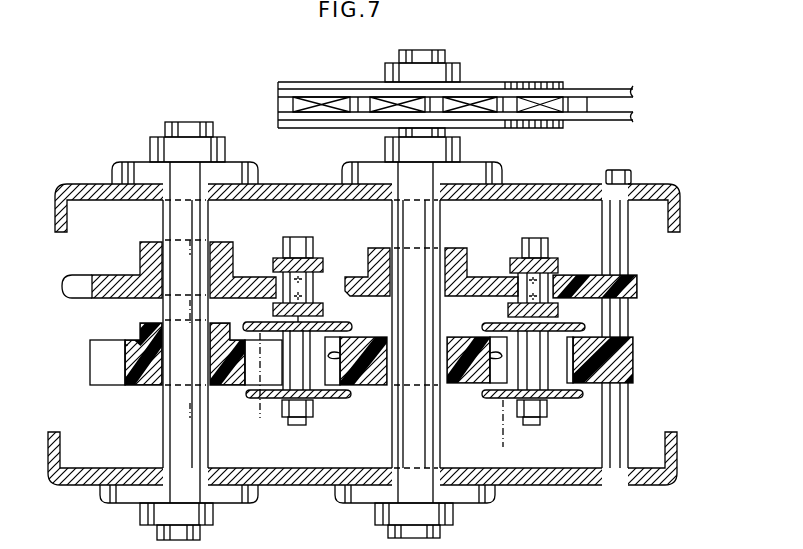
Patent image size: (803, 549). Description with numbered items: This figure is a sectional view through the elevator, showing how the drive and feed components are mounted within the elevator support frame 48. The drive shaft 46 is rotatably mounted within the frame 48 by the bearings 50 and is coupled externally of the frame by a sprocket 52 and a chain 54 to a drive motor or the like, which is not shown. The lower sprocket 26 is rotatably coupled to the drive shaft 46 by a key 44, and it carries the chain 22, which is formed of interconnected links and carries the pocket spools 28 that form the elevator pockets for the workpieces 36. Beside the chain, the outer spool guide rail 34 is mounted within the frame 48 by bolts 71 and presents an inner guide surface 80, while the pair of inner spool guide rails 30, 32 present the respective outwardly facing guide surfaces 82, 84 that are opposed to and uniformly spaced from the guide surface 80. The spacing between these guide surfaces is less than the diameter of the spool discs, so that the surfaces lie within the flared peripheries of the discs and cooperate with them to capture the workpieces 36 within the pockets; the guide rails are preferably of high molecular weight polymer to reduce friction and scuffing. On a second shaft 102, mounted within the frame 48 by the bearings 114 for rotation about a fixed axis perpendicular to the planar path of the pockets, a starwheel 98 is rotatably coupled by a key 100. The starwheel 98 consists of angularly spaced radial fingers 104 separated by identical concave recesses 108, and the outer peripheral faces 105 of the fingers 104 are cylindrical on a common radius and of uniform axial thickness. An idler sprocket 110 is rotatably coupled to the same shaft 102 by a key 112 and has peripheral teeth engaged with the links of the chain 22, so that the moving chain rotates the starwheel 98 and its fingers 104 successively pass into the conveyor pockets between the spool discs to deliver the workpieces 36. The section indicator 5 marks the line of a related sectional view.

The section line 5- 5 is at (105, 313).
The chain 22 is at (317, 252).
The lower sprocket 26 is at (378, 253).
The pocket spools 28 is at (332, 404).
The inner spool guide rail 30 is at (627, 378).
The inner spool guide rail 32 is at (370, 370).
The outer spool guide rail 34 is at (463, 383).
The workpieces 36 is at (381, 400).
The key 44 is at (453, 250).
The drive shaft 46 is at (403, 447).
The elevator support frame 48 is at (548, 190).
The bearings 50 is at (360, 160).
The sprocket 52 is at (342, 83).
The chain 54 is at (612, 90).
The bolts 71 is at (628, 175).
The inner guide surface 80 is at (640, 357).
The guide surface 82 is at (358, 340).
The guide surface 84 is at (466, 350).
The starwheel 98 is at (236, 388).
The key 100 is at (275, 322).
The shaft 102 is at (163, 443).
The radial fingers 104 is at (110, 383).
The outer peripheral faces 105 is at (90, 377).
The concave recesses 108 is at (125, 352).
The idler sprocket 110 is at (140, 248).
The key 112 is at (223, 242).
The bearings 114 is at (133, 160).